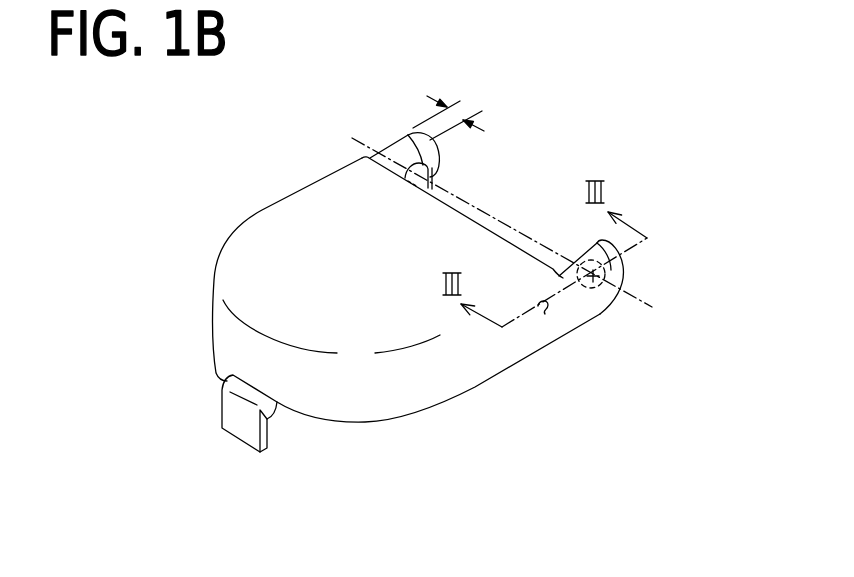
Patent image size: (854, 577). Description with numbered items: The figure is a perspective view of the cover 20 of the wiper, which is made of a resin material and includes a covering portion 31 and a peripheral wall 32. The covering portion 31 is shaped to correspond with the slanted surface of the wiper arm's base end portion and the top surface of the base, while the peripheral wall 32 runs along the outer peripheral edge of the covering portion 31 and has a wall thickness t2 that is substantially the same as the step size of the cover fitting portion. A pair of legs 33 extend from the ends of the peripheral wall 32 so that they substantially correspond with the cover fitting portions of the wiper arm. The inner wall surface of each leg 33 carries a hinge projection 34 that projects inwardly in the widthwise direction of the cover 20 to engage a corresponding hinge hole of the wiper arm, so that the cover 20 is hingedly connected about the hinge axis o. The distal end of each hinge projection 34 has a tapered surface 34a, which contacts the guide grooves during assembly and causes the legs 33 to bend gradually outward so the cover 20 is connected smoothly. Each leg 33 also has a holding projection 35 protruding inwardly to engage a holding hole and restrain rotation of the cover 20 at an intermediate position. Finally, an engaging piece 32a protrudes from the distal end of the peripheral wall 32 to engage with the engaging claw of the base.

The cover 20 is at (545, 149).
The covering portion 31 is at (347, 272).
The peripheral wall 32 is at (375, 405).
The engaging piece 32a is at (238, 430).
The leg 33 is at (400, 148).
The hinge projection 34 is at (420, 166).
The tapered surface 34a is at (433, 171).
The holding projection 35 is at (549, 320).
The wall thickness t2 is at (460, 111).
The hinge axis o is at (417, 197).